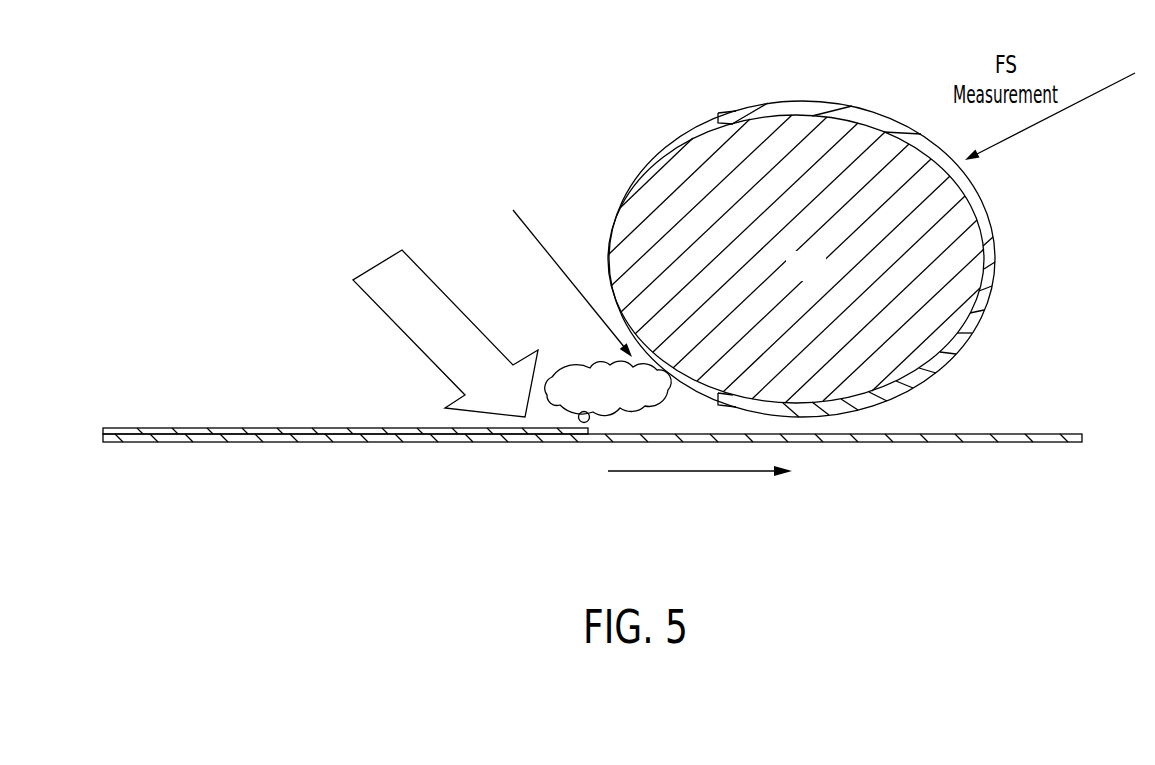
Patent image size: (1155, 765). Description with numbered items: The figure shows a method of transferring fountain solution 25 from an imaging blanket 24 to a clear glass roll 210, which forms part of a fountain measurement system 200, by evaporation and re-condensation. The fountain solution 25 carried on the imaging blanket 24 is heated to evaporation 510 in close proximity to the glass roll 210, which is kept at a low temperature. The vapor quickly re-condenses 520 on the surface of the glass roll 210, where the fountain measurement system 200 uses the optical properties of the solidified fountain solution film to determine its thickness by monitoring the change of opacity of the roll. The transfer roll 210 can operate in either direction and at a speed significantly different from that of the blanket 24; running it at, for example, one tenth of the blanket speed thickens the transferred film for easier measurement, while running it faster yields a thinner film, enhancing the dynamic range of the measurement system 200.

The fountain measurement system 200 is at (664, 136).
The glass roll 210 is at (822, 279).
The imaging blanket 24 is at (172, 442).
The fountain solution 25 is at (160, 428).
The evaporation 510 is at (377, 265).
The re-condensation 520 is at (442, 185).